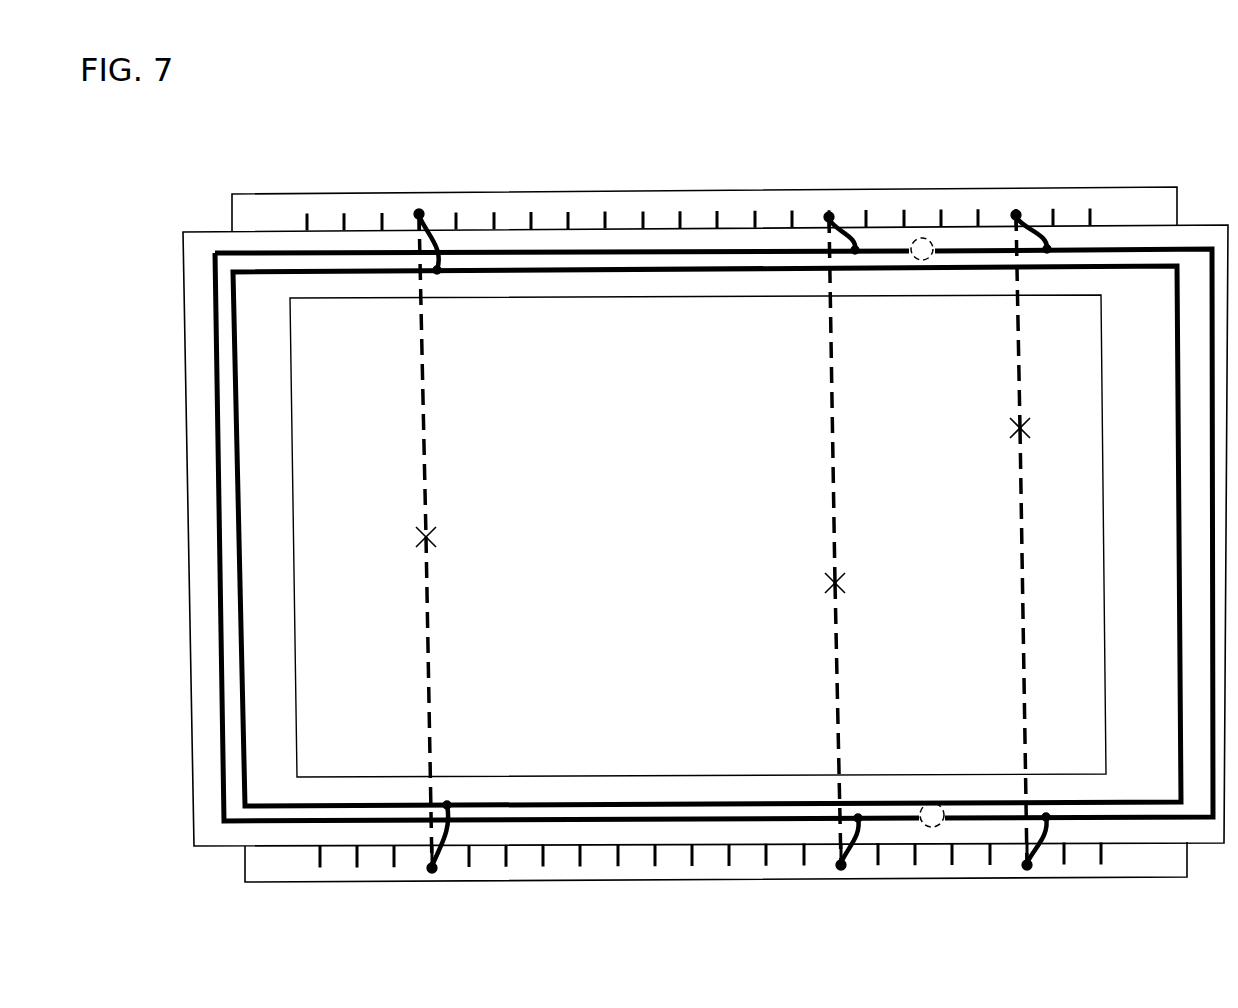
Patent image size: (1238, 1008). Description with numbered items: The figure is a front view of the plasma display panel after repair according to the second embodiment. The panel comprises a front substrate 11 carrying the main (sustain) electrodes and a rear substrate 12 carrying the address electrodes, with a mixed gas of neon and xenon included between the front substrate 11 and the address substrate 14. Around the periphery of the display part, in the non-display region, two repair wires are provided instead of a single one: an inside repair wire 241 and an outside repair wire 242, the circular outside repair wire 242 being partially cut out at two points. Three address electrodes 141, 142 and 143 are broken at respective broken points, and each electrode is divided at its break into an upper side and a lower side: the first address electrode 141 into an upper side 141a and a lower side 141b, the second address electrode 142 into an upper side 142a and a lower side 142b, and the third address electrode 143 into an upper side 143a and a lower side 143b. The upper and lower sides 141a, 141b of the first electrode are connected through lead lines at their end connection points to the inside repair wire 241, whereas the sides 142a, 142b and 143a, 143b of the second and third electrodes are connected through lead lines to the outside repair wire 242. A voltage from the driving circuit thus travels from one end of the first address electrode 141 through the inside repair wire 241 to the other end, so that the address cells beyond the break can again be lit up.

The front substrate 11 is at (193, 757).
The rear substrate 12 is at (258, 862).
The address substrate 14 is at (302, 222).
The inside repair wire 241 is at (237, 445).
The outside repair wire 242 is at (218, 505).
The first address electrode 141 is at (510, 541).
The first address electrode (upper side) 141a is at (424, 395).
The first address electrode (lower side) 141b is at (476, 702).
The second address electrode 142 is at (916, 541).
The second address electrode (upper side) 142a is at (834, 472).
The second address electrode (lower side) 142b is at (885, 724).
The third address electrode 143 is at (1093, 540).
The third address electrode (upper side) 143a is at (1018, 350).
The third address electrode (lower side) 143b is at (1060, 646).